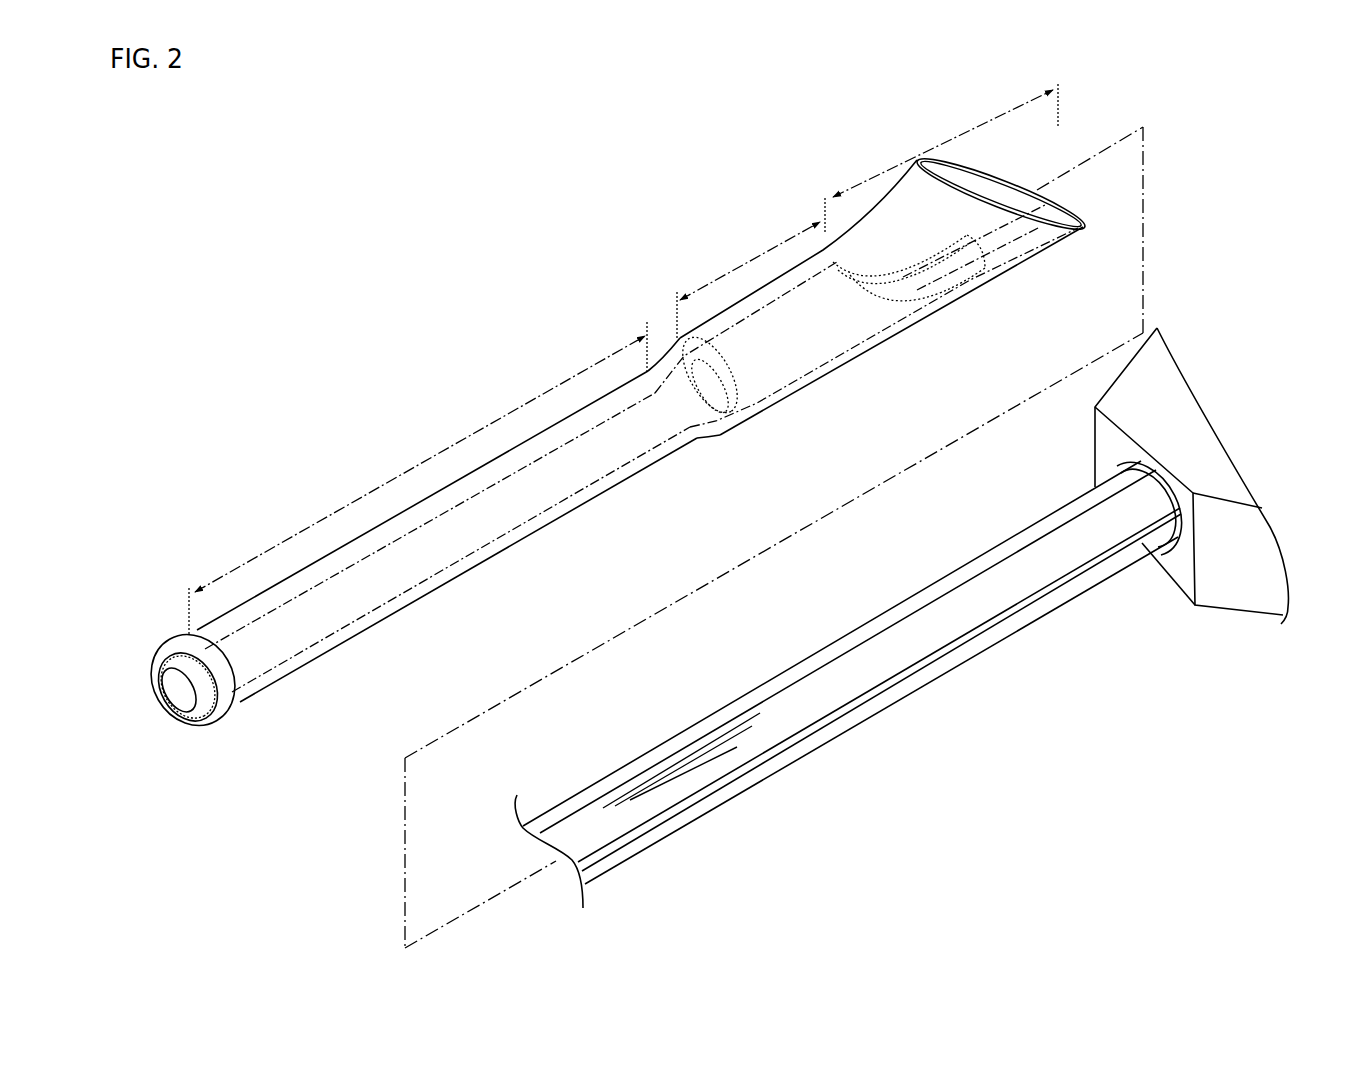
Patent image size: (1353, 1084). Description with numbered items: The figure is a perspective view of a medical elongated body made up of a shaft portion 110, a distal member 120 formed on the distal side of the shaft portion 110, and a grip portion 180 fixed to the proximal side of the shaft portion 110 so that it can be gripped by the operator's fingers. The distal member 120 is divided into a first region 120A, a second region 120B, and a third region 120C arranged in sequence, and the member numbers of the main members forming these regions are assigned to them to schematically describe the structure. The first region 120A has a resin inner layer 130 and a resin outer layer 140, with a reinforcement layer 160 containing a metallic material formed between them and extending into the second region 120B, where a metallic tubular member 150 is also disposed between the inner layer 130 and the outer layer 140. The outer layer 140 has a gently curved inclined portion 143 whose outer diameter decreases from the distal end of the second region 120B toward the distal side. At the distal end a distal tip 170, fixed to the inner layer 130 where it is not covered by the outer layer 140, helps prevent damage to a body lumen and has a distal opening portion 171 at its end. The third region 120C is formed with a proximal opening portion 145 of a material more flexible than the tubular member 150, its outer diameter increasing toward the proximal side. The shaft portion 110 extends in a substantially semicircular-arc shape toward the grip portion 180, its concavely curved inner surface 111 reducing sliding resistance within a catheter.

The shaft portion 110 is at (720, 798).
The inner surface 111 is at (798, 722).
The distal member 120 is at (317, 677).
The first region 120A is at (418, 478).
The second region 120B is at (751, 268).
The third region 120C is at (945, 140).
The inner layer 130 is at (437, 562).
The outer layer 140 is at (866, 316).
The inclined portion 143 is at (658, 350).
The proximal opening portion 145 is at (1075, 233).
The tubular member 150 is at (793, 356).
The reinforcement layer 160 is at (461, 559).
The distal tip 170 is at (213, 693).
The distal opening portion 171 is at (168, 700).
The grip portion 180 is at (1232, 628).